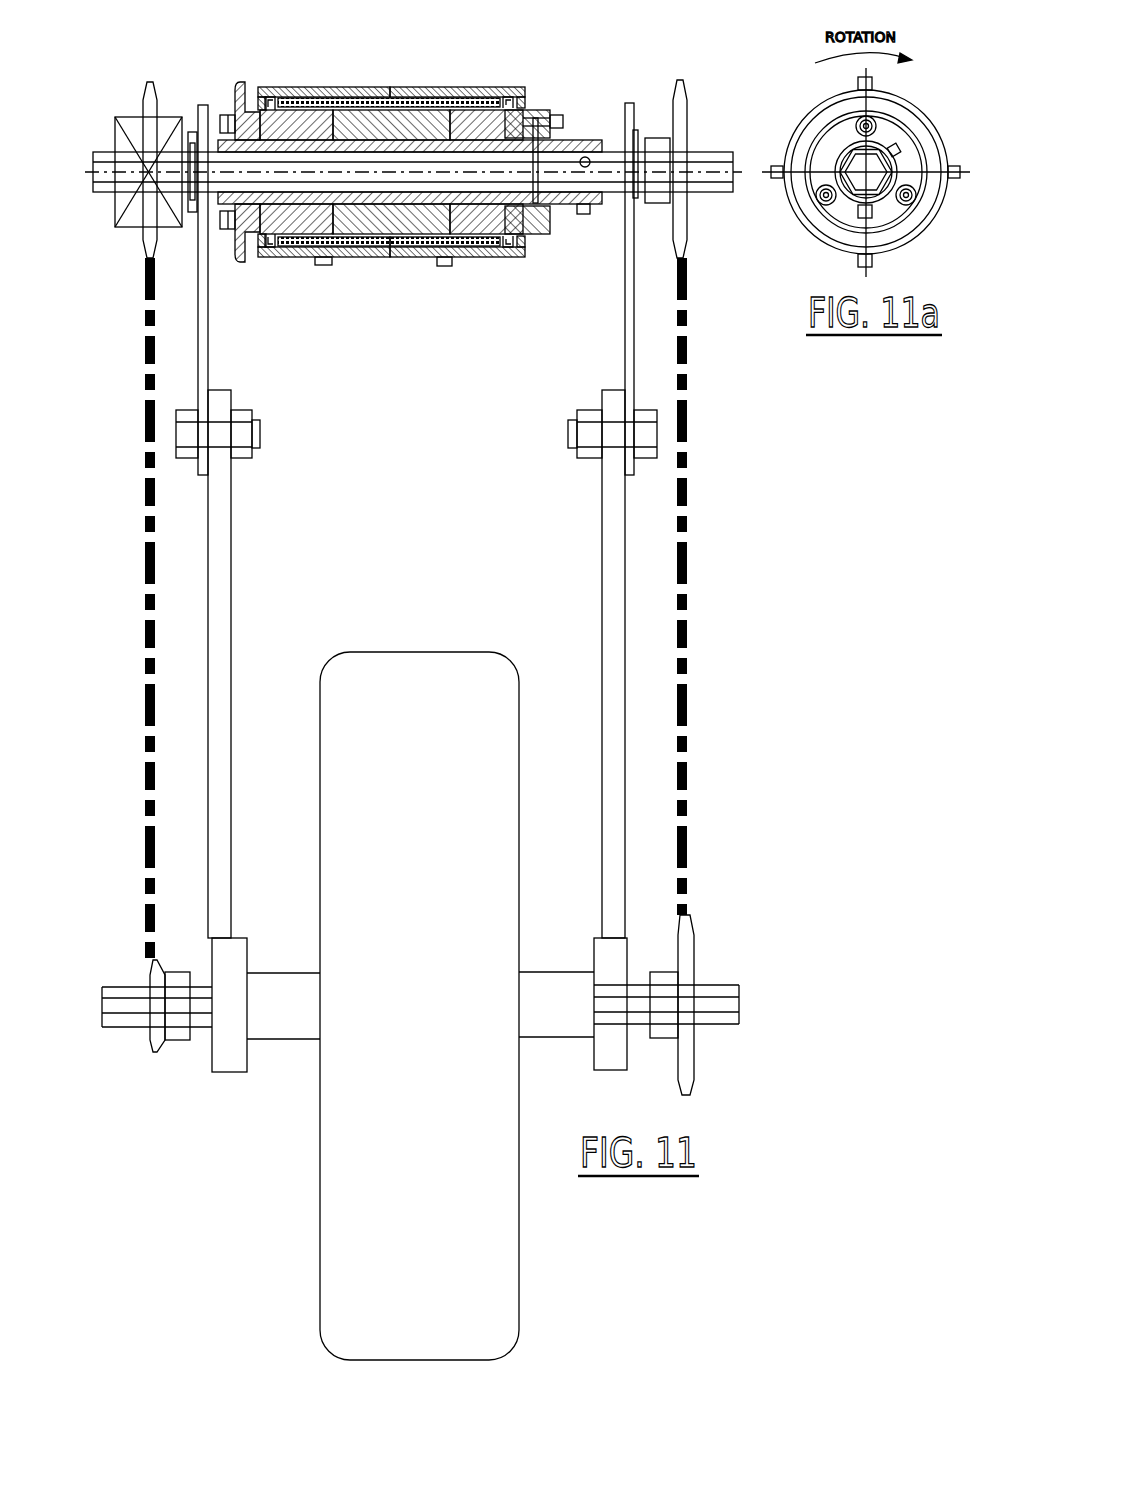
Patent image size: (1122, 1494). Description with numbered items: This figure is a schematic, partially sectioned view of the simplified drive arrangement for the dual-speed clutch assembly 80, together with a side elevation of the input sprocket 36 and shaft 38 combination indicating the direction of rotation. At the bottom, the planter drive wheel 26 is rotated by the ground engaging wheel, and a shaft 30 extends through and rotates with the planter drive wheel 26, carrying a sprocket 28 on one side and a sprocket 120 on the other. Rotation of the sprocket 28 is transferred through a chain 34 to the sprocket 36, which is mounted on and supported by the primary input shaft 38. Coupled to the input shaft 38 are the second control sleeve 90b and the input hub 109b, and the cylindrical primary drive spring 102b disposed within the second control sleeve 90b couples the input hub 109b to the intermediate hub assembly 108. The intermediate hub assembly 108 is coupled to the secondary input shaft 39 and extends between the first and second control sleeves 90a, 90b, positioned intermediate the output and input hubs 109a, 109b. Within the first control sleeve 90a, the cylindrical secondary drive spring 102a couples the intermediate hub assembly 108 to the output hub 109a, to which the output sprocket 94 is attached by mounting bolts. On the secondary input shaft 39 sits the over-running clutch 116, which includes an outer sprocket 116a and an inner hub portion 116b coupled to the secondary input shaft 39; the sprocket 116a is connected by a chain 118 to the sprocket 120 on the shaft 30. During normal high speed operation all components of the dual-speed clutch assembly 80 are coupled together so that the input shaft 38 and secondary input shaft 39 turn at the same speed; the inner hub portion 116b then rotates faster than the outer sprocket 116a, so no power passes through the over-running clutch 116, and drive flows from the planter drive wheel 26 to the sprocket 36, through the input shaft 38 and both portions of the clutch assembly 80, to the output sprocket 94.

In FIG. 11, the planter drive wheel 26 is at (424, 789).
In FIG. 11, the sprocket 28 is at (686, 945).
In FIG. 11, the shaft 30 is at (730, 988).
In FIG. 11, the chain 34 is at (688, 440).
In FIG. 11, the sprocket 36 is at (680, 72).
In FIG. 11a, the sprocket 36 is at (786, 222).
In FIG. 11, the primary input shaft 38 is at (612, 185).
In FIG. 11a, the primary input shaft 38 is at (845, 150).
In FIG. 11, the secondary input shaft 39 is at (213, 183).
In FIG. 11, the dual-speed clutch assembly 80 is at (396, 167).
In FIG. 11, the first control sleeve 90a is at (278, 90).
In FIG. 11, the second control sleeve 90b is at (430, 87).
In FIG. 11, the output sprocket 94 is at (237, 82).
In FIG. 11, the secondary drive spring 102a is at (368, 246).
In FIG. 11, the primary drive spring 102b is at (467, 243).
In FIG. 11, the intermediate hub assembly 108 is at (368, 100).
In FIG. 11, the output hub 109a is at (283, 258).
In FIG. 11, the input hub 109b is at (507, 100).
In FIG. 11, the over-running clutch 116 is at (131, 154).
In FIG. 11, the outer sprocket 116a is at (112, 112).
In FIG. 11, the inner hub portion 116b is at (128, 218).
In FIG. 11, the chain 118 is at (148, 800).
In FIG. 11, the sprocket 120 is at (155, 982).